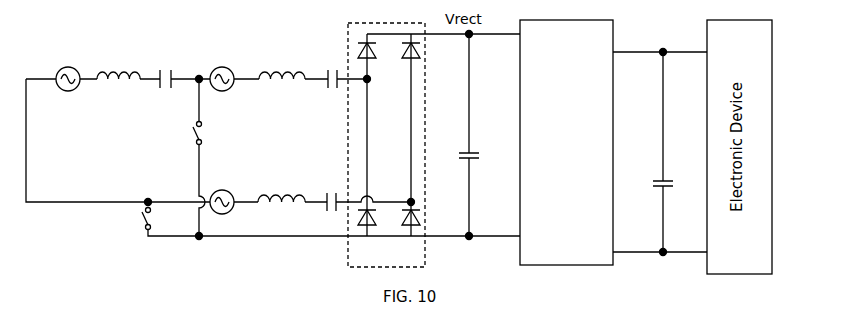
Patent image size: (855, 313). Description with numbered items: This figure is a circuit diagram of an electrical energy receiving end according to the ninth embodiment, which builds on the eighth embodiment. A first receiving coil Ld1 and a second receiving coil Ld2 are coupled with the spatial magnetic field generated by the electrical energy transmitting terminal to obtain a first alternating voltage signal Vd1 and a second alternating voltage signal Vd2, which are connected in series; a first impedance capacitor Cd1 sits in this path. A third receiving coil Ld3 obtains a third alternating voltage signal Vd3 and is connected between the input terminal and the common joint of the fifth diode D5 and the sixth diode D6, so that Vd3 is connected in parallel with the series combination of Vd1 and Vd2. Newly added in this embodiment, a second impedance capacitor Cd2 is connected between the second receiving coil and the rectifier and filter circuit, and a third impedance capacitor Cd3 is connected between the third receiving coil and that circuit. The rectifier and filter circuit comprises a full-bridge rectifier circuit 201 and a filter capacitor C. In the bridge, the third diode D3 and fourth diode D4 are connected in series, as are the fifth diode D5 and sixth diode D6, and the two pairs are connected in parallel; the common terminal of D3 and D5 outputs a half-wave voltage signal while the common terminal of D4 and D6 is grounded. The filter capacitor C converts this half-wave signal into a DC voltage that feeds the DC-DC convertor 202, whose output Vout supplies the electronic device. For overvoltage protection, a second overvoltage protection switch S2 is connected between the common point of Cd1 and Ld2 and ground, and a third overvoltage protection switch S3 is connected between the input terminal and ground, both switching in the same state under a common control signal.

The full-bridge rectifier circuit 201 is at (434, 145).
The DC-DC convertor 202 is at (574, 254).
The first alternating voltage signal Vd1 is at (70, 71).
The second alternating voltage signal Vd2 is at (223, 70).
The third alternating voltage signal Vd3 is at (221, 193).
The first receiving coil Ld1 is at (118, 66).
The second receiving coil Ld2 is at (282, 66).
The third receiving coil Ld3 is at (281, 189).
The first impedance capacitor Cd1 is at (164, 70).
The second impedance capacitor Cd2 is at (330, 71).
The third impedance capacitor Cd3 is at (332, 193).
The second overvoltage protection switch S2 is at (188, 133).
The third overvoltage protection switch S3 is at (132, 220).
The third diode D3 is at (378, 52).
The fourth diode D4 is at (378, 219).
The fifth diode D5 is at (423, 52).
The sixth diode D6 is at (423, 219).
The filter capacitor C is at (459, 156).
The output capacitor Vout is at (649, 174).